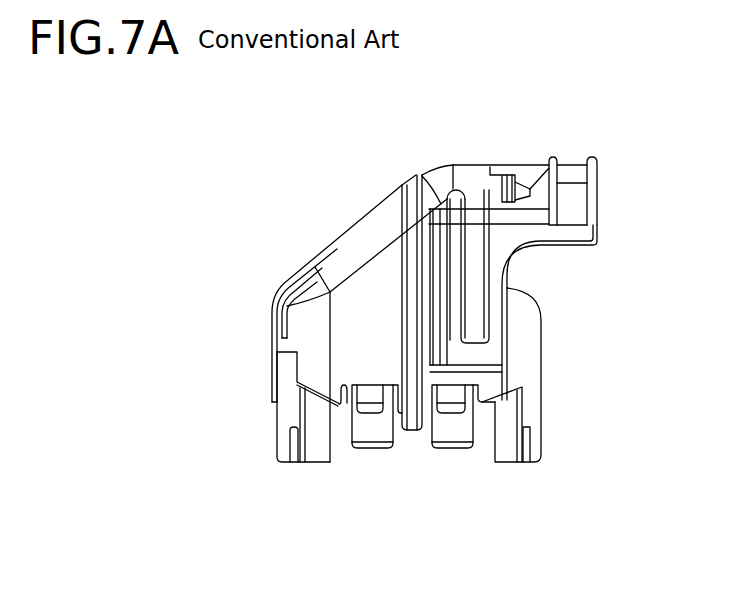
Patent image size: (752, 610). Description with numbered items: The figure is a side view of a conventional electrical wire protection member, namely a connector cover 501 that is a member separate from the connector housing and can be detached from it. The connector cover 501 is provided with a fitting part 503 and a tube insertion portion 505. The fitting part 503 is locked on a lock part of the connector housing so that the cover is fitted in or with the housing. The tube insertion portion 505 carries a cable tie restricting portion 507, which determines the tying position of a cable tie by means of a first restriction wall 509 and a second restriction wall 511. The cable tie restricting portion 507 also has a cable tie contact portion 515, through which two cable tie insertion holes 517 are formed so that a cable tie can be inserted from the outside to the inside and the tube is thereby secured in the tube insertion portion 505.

The connector cover 501 is at (328, 187).
The fitting part 503 is at (377, 443).
The tube insertion portion 505 is at (530, 217).
The cable tie restricting portion 507 is at (575, 160).
The first restriction wall 509 is at (598, 165).
The second restriction wall 511 is at (550, 158).
The cable tie contact portion 515 is at (566, 170).
The cable tie insertion hole 517 is at (577, 192).